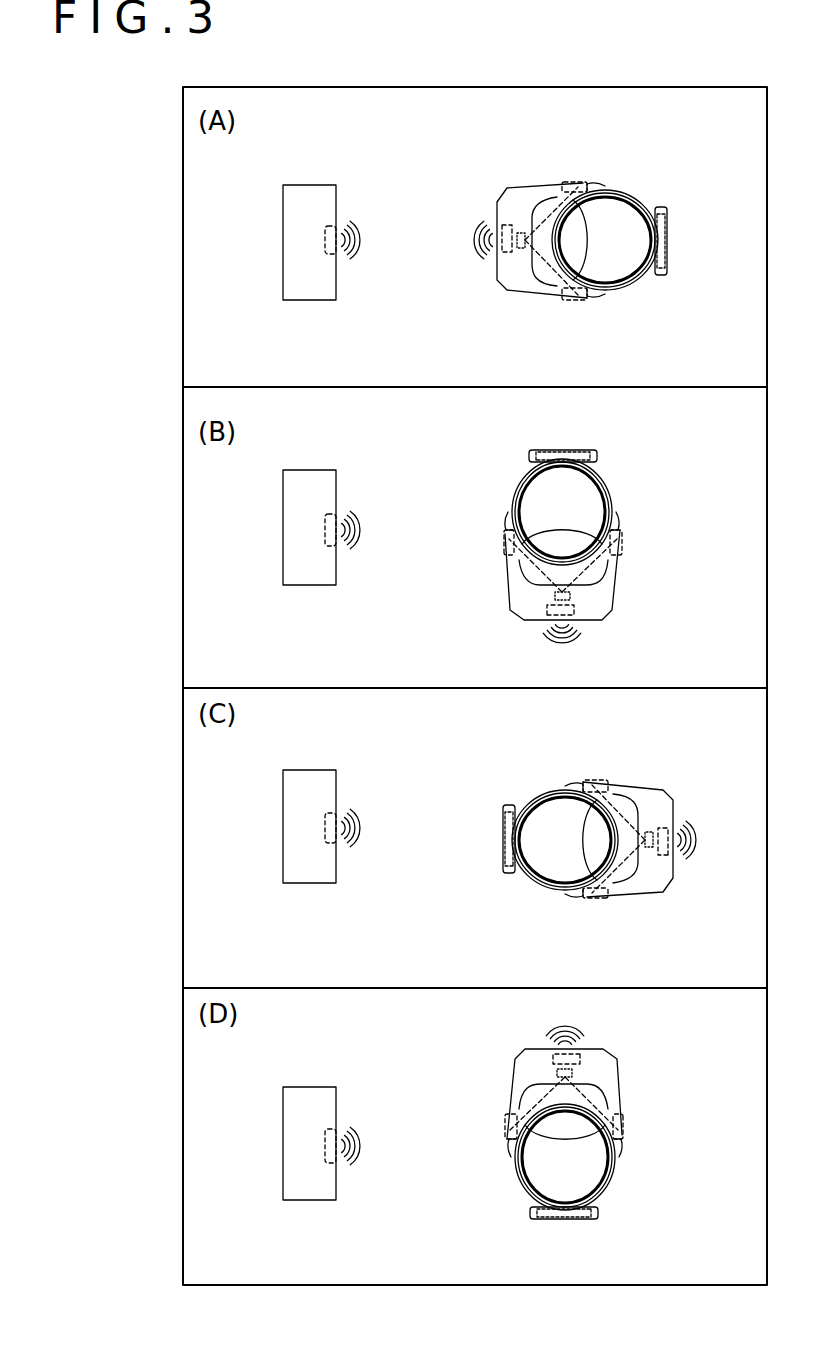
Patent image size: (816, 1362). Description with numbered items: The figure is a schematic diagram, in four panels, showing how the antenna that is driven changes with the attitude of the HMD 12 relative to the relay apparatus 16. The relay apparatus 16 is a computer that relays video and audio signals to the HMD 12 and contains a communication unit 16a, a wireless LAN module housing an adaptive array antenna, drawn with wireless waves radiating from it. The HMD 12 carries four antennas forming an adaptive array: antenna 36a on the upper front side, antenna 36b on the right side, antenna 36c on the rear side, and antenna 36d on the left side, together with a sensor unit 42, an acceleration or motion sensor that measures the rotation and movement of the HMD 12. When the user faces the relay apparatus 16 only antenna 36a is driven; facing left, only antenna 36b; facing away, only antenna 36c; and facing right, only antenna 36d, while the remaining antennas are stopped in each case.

The head-mounted display 12 is at (530, 187).
The relay apparatus 16 is at (310, 185).
The communication unit 16a is at (337, 253).
The antenna 36a is at (500, 225).
The antenna 36b is at (575, 182).
The antenna 36c is at (670, 240).
The antenna 36d is at (576, 300).
The sensor unit 42 is at (522, 250).